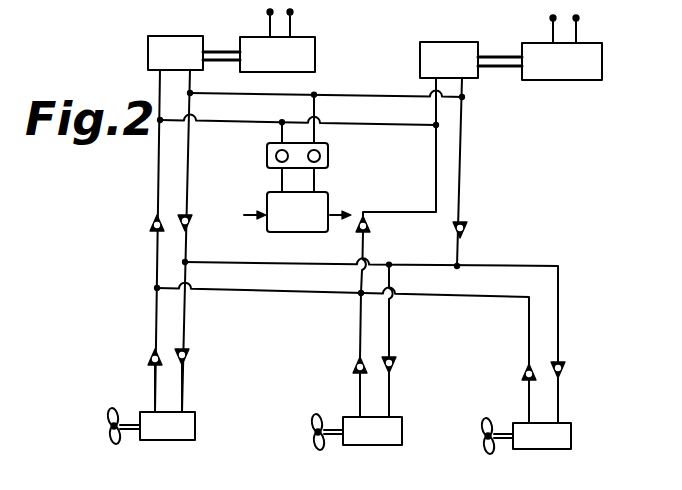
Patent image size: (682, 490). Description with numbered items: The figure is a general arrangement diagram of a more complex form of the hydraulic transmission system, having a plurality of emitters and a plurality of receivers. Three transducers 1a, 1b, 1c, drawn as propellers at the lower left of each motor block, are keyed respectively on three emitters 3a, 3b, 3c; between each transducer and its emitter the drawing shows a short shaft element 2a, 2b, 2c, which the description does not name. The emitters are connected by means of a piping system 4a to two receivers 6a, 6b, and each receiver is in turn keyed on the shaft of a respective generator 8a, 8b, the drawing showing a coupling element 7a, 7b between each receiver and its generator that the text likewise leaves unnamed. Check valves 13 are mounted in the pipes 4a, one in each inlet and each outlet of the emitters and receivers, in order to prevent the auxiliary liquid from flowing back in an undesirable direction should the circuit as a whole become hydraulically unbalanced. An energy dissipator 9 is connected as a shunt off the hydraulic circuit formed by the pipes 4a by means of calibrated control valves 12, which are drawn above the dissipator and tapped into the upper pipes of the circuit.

The transducer 1a is at (117, 443).
The transducer 1b is at (324, 445).
The transducer 1c is at (492, 450).
The propeller shaft 2a is at (128, 413).
The propeller shaft 2b is at (332, 418).
The propeller shaft 2c is at (503, 426).
The emitter 3a is at (183, 440).
The emitter 3b is at (385, 445).
The emitter 3c is at (573, 437).
The piping system 4a is at (150, 250).
The receiver 6a is at (172, 44).
The receiver 6b is at (455, 52).
The coupling 7a is at (217, 50).
The coupling 7b is at (493, 68).
The generator 8a is at (313, 55).
The generator 8b is at (590, 57).
The energy dissipator 9 is at (327, 200).
The calibrated control valve 12 is at (260, 159).
The check valve 13 is at (151, 221).